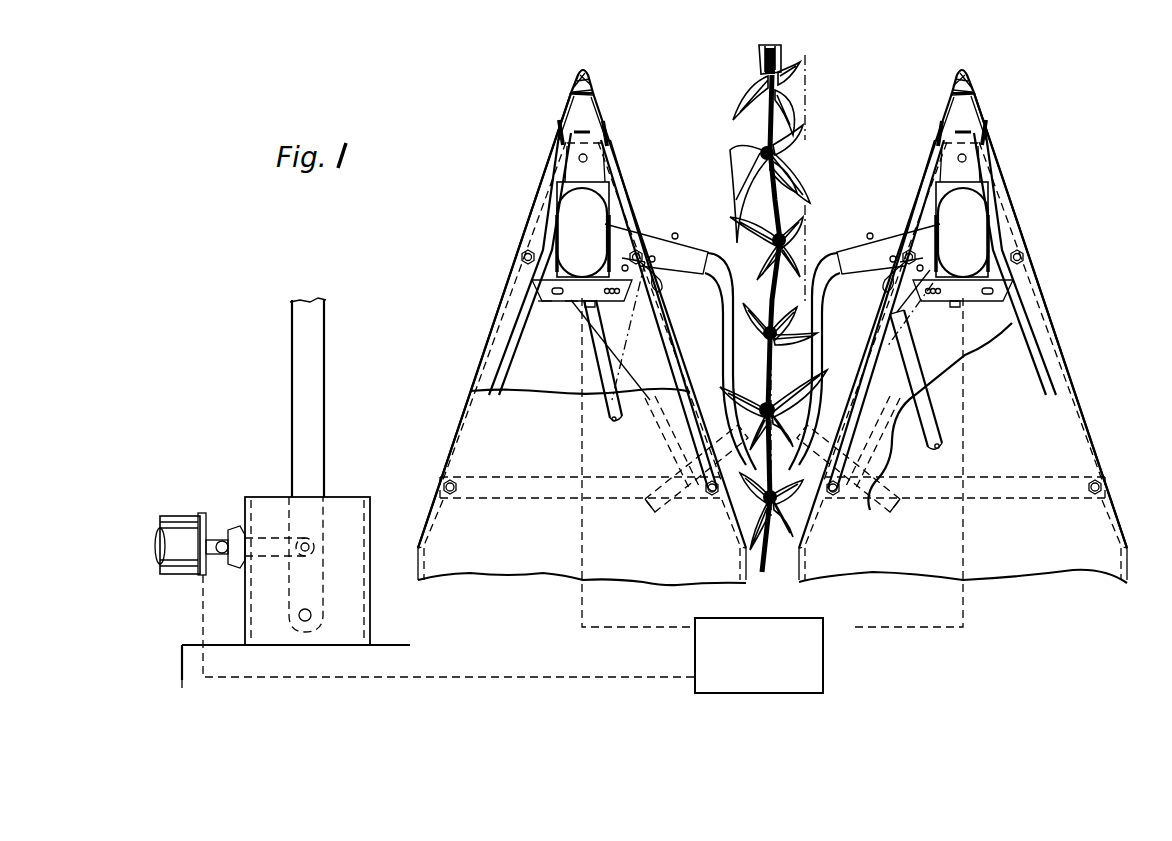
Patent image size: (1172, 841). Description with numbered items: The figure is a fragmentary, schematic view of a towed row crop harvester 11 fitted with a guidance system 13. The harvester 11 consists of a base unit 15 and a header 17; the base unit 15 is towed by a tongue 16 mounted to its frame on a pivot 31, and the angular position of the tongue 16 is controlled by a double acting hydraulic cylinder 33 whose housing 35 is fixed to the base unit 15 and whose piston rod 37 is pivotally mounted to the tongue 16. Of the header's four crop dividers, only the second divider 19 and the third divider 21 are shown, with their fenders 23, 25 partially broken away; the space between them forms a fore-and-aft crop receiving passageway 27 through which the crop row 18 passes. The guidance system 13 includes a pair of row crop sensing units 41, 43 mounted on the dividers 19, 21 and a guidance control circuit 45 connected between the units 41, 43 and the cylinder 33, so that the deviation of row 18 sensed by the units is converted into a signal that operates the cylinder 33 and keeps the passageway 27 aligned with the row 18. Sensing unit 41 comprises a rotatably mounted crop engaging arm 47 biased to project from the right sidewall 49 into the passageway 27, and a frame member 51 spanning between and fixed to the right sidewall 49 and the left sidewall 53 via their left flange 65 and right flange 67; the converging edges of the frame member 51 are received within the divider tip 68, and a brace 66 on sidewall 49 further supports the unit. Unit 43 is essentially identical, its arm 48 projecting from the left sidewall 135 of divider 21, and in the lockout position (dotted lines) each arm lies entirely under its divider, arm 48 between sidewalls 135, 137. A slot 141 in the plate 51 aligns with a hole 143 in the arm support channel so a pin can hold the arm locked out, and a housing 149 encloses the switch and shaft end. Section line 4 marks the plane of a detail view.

The section line 4- 4 is at (797, 71).
The row crop harvester 11 is at (430, 186).
The guidance system 13 is at (1067, 279).
The base unit 15 is at (192, 644).
The tongue 16 is at (325, 372).
The header 17 is at (451, 276).
The crop row 18 is at (760, 71).
The second divider 19 is at (440, 477).
The third divider 21 is at (1077, 380).
The fender 23 is at (520, 449).
The fender 25 is at (1046, 453).
The crop receiving passageway 27 is at (771, 316).
The pivot 31 is at (297, 615).
The double acting hydraulic cylinder 33 is at (191, 510).
The housing 35 is at (181, 556).
The piston rod 37 is at (277, 538).
The row crop sensing unit 41 is at (568, 320).
The row crop sensing unit 43 is at (992, 312).
The guidance control circuit 45 is at (826, 663).
The crop engaging arm 47 is at (727, 357).
The crop engaging arm 48 is at (823, 312).
The right sidewall 49 is at (715, 428).
The frame member 51 is at (545, 302).
The left sidewall 53 is at (486, 354).
The left flange 65 is at (493, 365).
The brace 66 is at (626, 350).
The right flange 67 is at (662, 333).
The divider tip 68 is at (592, 80).
The left sidewall 135 is at (868, 360).
The right sidewall 137 is at (1057, 325).
The slot 141 is at (612, 286).
The hole 143 is at (660, 265).
The housing 149 is at (596, 215).